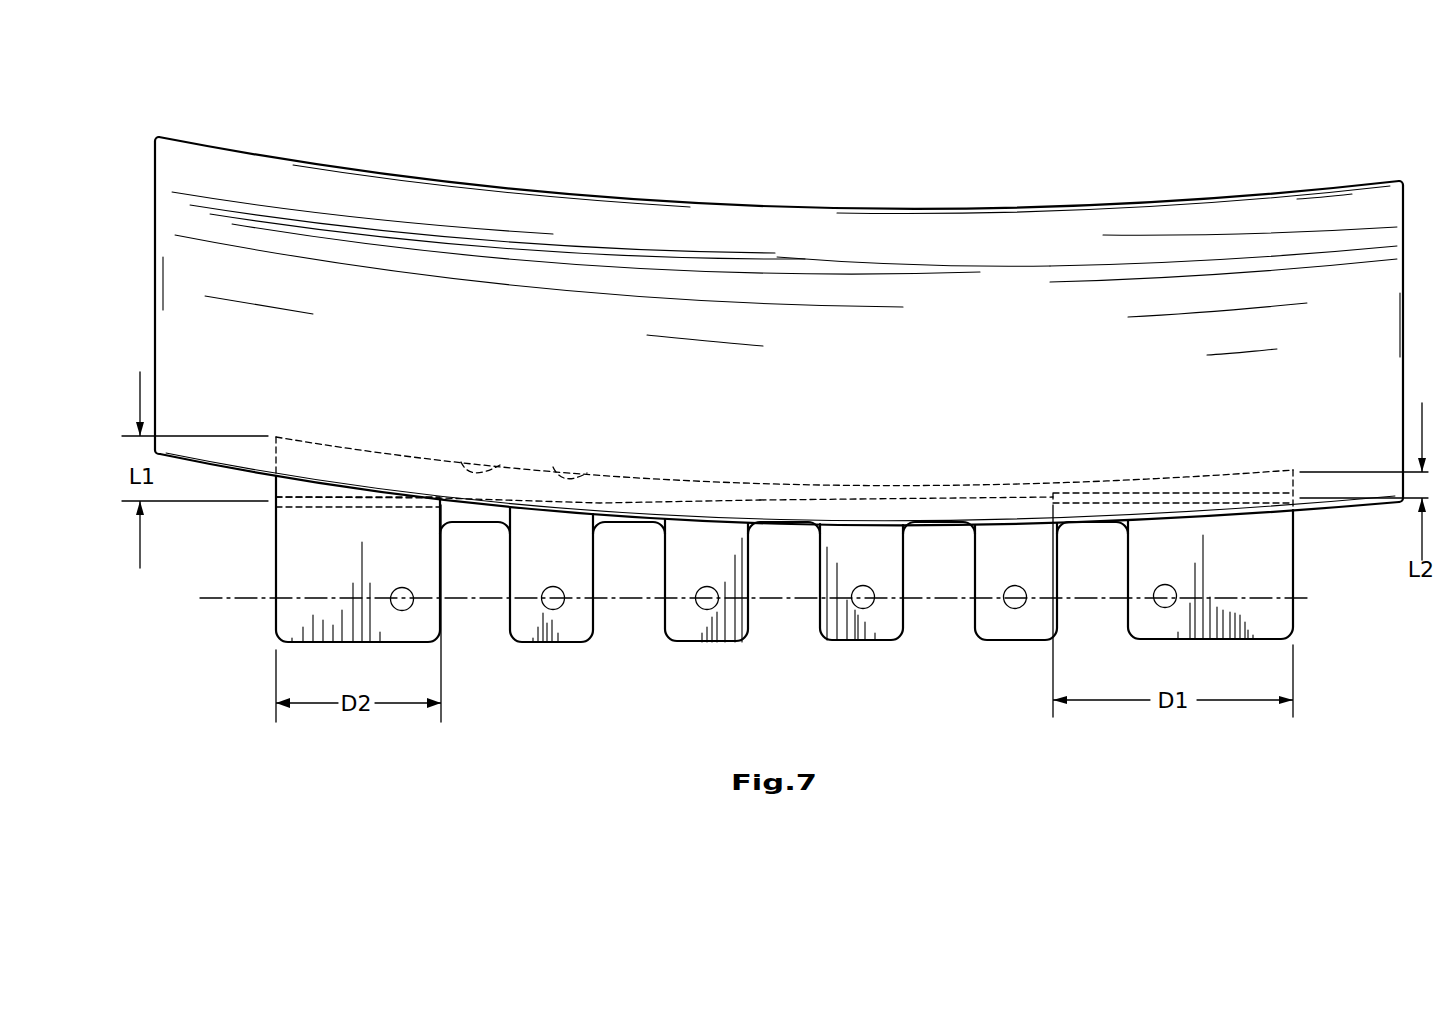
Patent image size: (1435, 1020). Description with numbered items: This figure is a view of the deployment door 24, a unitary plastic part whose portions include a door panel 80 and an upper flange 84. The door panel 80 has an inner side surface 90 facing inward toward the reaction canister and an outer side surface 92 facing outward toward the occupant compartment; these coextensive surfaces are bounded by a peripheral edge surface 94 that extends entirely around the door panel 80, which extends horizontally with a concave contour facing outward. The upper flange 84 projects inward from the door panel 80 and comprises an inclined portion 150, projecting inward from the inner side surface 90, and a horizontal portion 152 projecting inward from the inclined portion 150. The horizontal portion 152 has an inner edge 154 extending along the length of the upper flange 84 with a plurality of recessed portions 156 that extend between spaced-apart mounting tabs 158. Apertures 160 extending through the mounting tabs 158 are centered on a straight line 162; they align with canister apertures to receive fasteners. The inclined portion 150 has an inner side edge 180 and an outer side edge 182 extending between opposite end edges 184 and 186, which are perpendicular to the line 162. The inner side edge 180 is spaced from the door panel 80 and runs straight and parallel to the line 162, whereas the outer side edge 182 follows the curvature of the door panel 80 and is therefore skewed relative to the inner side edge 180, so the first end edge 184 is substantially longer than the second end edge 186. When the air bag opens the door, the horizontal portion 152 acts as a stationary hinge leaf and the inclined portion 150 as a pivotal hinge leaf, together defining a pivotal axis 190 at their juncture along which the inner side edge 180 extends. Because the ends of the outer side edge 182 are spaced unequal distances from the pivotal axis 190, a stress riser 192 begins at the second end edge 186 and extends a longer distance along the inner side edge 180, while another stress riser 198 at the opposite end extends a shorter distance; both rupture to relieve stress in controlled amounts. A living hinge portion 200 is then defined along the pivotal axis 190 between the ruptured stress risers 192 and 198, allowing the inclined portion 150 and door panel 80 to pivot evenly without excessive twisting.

The deployment door 24 is at (683, 170).
The door panel 80 is at (742, 232).
The upper flange 84 is at (1295, 555).
The inner side surface 90 is at (461, 462).
The outer side surface 92 is at (192, 160).
The peripheral edge surface 94 is at (153, 245).
The inclined portion 150 is at (293, 493).
The horizontal portion 152 is at (862, 557).
The inner edge 154 is at (558, 643).
The recessed portions 156 is at (593, 632).
The mounting tabs 158 is at (748, 632).
The apertures 160 is at (1007, 608).
The straight line 162 is at (240, 603).
The inner side edge 180 is at (683, 503).
The outer side edge 182 is at (553, 467).
The first end edge 184 is at (275, 480).
The second end edge 186 is at (1295, 483).
The pivotal axis 190 is at (723, 498).
The stress riser 192 is at (1127, 494).
The stress riser 198 is at (367, 508).
The living hinge portion 200 is at (917, 493).